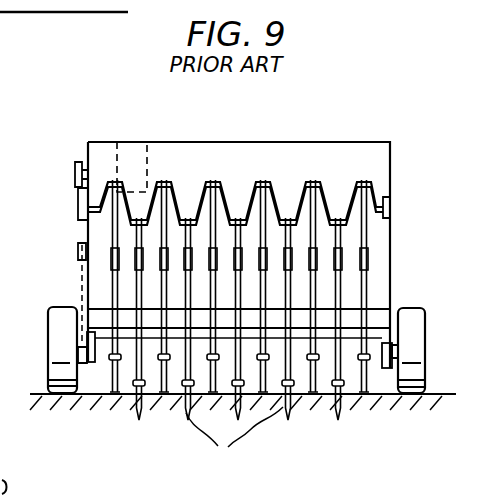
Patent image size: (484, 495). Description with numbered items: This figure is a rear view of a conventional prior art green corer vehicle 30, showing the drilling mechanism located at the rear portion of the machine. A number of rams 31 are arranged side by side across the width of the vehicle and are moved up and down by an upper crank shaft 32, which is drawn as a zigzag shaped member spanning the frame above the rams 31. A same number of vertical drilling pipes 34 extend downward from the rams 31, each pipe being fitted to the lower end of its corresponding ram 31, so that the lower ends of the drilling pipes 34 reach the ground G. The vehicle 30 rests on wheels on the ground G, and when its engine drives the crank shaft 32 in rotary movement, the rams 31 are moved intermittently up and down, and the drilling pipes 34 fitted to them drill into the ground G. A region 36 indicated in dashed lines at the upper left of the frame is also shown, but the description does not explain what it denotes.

The green corer vehicle 30 is at (326, 141).
The rams 31 is at (367, 296).
The upper crank shaft 32 is at (283, 200).
The vertical drilling pipes 34 is at (234, 441).
The mounting region (dashed) 36 is at (118, 140).
The ground G is at (446, 392).